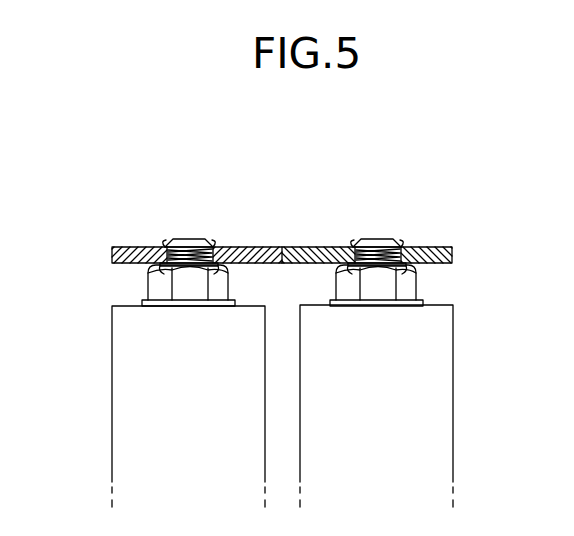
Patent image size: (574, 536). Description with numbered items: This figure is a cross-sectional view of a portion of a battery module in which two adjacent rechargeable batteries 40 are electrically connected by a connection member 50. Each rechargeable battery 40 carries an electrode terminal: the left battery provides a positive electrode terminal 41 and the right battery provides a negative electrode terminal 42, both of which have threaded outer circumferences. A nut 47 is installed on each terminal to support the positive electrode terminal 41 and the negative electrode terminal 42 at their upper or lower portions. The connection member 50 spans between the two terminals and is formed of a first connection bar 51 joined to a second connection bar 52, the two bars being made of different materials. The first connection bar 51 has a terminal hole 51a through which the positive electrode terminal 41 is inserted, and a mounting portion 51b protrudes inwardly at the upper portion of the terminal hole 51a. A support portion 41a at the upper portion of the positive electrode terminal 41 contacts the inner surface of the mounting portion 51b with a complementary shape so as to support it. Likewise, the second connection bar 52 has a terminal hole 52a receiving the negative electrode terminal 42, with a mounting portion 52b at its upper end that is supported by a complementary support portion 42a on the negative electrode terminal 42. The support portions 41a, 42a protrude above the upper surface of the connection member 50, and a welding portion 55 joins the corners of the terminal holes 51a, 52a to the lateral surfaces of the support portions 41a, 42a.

The rechargeable battery 40 is at (112, 384).
The positive electrode terminal 41 is at (204, 226).
The support portion 41a is at (208, 245).
The negative electrode terminal 42 is at (365, 226).
The support portion 42a is at (356, 246).
The nut 47 is at (155, 290).
The connection member 50 is at (286, 212).
The first connection bar 51 is at (163, 237).
The terminal hole 51a is at (165, 281).
The mounting portion 51b is at (165, 254).
The second connection bar 52 is at (405, 237).
The terminal hole 52a is at (403, 281).
The mounting portion 52b is at (403, 253).
The welding portion 55 is at (165, 246).